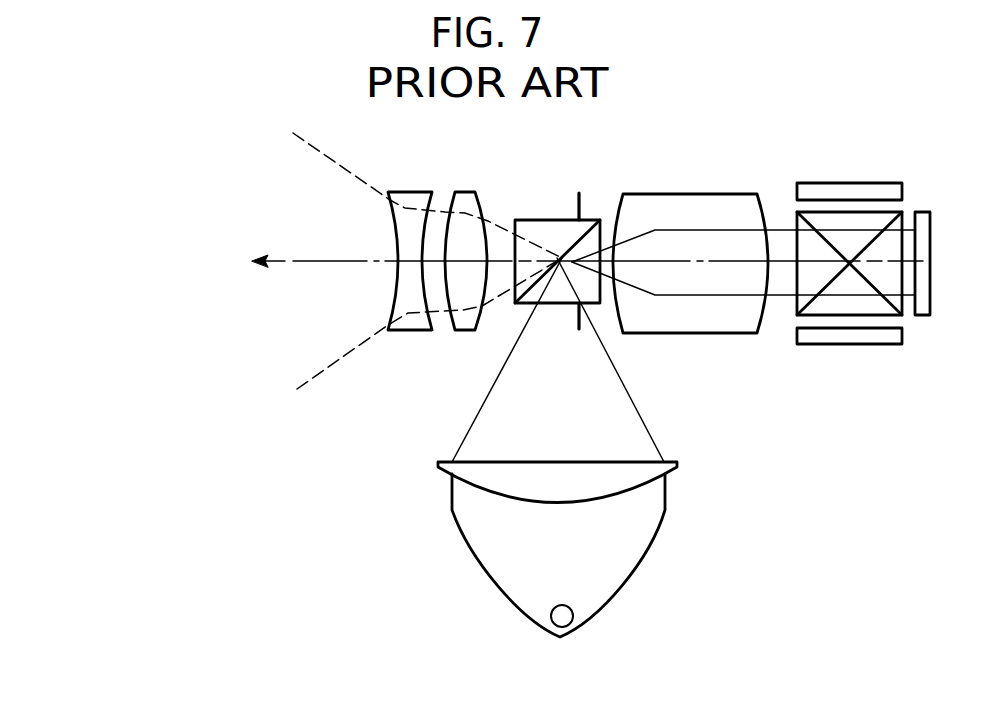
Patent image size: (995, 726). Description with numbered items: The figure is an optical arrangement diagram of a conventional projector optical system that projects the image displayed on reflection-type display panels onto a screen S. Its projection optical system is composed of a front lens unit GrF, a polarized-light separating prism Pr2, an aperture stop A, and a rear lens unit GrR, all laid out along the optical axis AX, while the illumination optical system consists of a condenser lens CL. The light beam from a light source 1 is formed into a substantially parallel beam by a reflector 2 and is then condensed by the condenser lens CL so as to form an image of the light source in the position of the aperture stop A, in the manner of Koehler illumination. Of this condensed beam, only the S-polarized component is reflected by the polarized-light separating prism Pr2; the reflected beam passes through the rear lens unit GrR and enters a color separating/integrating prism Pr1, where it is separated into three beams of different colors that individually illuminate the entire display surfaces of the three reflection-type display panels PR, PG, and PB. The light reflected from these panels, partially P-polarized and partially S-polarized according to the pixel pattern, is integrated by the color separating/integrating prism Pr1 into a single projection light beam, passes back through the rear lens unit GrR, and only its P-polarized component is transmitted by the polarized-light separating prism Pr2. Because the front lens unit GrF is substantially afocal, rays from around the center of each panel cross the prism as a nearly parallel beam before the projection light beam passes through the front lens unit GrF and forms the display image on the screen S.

The screen S is at (228, 275).
The optical axis AX is at (325, 262).
The front lens unit GrF is at (377, 171).
The polarized-light separating prism Pr2 is at (532, 220).
The aperture stop A is at (578, 193).
The rear lens unit GrR is at (608, 173).
The reflection-type display panel PR is at (845, 182).
The reflection-type display panel PG is at (922, 212).
The reflection-type display panel PB is at (853, 345).
The color separating/integrating prism Pr1 is at (797, 303).
The condenser lens CL is at (663, 462).
The reflector 2 is at (655, 533).
The light source 1 is at (573, 617).